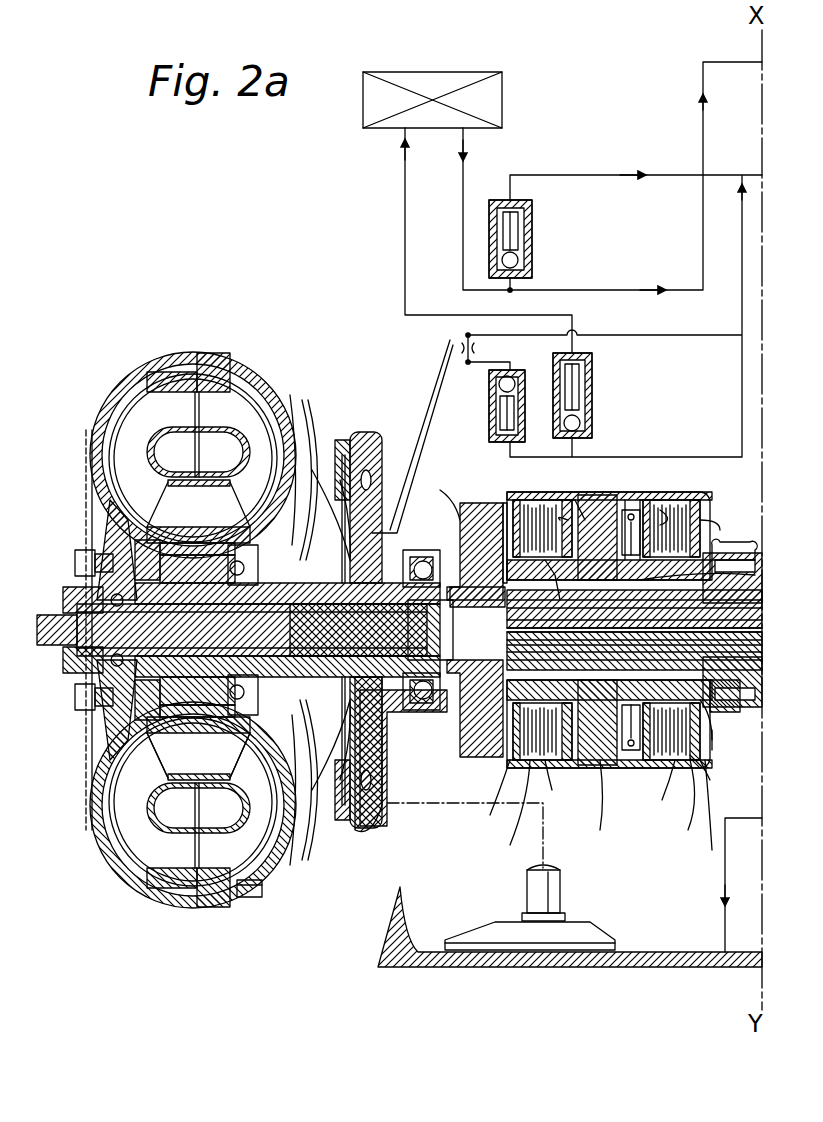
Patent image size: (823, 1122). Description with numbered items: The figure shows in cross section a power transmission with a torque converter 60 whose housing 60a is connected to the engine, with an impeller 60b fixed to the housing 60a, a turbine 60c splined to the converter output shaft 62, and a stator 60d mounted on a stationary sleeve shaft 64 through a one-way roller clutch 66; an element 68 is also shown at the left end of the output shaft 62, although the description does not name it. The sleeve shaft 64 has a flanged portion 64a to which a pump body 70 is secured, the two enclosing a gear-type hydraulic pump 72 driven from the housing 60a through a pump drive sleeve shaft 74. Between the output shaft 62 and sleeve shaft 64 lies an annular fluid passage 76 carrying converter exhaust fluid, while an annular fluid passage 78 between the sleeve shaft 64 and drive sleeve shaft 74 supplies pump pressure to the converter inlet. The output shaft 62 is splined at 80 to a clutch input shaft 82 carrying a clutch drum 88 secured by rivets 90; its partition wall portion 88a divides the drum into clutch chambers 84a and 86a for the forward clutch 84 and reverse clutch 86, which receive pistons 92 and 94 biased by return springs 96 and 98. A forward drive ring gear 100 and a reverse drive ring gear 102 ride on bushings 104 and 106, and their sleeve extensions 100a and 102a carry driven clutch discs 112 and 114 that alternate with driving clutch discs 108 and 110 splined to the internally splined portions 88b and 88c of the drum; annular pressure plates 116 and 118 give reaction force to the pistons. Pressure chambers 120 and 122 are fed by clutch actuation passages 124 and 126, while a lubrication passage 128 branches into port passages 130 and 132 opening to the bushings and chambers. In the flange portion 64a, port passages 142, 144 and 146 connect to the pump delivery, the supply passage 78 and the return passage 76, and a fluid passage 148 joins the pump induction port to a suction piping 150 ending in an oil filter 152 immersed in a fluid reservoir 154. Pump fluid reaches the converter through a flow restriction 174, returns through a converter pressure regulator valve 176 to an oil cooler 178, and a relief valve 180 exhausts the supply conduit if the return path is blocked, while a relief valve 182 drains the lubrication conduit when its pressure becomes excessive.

The torque converter 60 is at (190, 347).
The housing 60a is at (296, 375).
The impeller 60b is at (306, 393).
The turbine 60c is at (148, 415).
The stator 60d is at (225, 524).
The output shaft 62 is at (252, 630).
The stationary sleeve shaft 64 is at (305, 560).
The flanged portion 64a is at (415, 396).
The one-way roller clutch 66 is at (198, 755).
The shaft end 68 is at (52, 645).
The pump body 70 is at (355, 432).
The hydraulic pump 72 is at (328, 465).
The pump drive sleeve shaft 74 is at (326, 617).
The annular fluid passage 76 is at (287, 630).
The annular fluid passage 78 is at (365, 630).
The spline 80 is at (477, 607).
The shaft 82 is at (430, 630).
The clutch 84 is at (527, 801).
The clutch chamber 84a is at (534, 868).
The clutch 86 is at (757, 807).
The clutch chamber 86a is at (730, 877).
The clutch drum 88 is at (588, 677).
The partition wall portion 88a is at (634, 853).
The internally splined portion 88b is at (587, 804).
The internally splined portion 88c is at (717, 852).
The rivets 90 is at (623, 666).
The piston 92 is at (589, 665).
The piston 94 is at (665, 792).
The return spring 96 is at (450, 735).
The return spring 98 is at (717, 770).
The forward drive ring gear 100 is at (480, 757).
The sleeve extension 100a is at (505, 451).
The reverse drive ring gear 102 is at (740, 715).
The sleeve extension 102a is at (770, 552).
The bushing 104 is at (470, 503).
The bushing 106 is at (740, 724).
The driving clutch discs 108 is at (563, 495).
The driving clutch discs 110 is at (668, 510).
The driven clutch discs 112 is at (563, 592).
The driven clutch discs 114 is at (755, 575).
The annular pressure plate 116 is at (505, 505).
The annular pressure plate 118 is at (712, 515).
The clutch actuation pressure chamber 120 is at (626, 500).
The clutch actuation pressure chamber 122 is at (641, 500).
The fluid passage 124 is at (755, 630).
The fluid passage 126 is at (755, 605).
The fluid passage 128 is at (755, 650).
The port passages 130 is at (772, 680).
The port passages 132 is at (745, 768).
The port passage 142 is at (385, 440).
The port passage 144 is at (422, 436).
The port passage 146 is at (416, 550).
The fluid passage 148 is at (355, 790).
The suction piping 150 is at (560, 860).
The oil filter 152 is at (612, 928).
The fluid reservoir 154 is at (392, 960).
The flow restriction 174 is at (476, 348).
The converter pressure regulator valve 176 is at (592, 408).
The oil cooler 178 is at (502, 108).
The relief valve 180 is at (488, 430).
The relief valve 182 is at (532, 250).